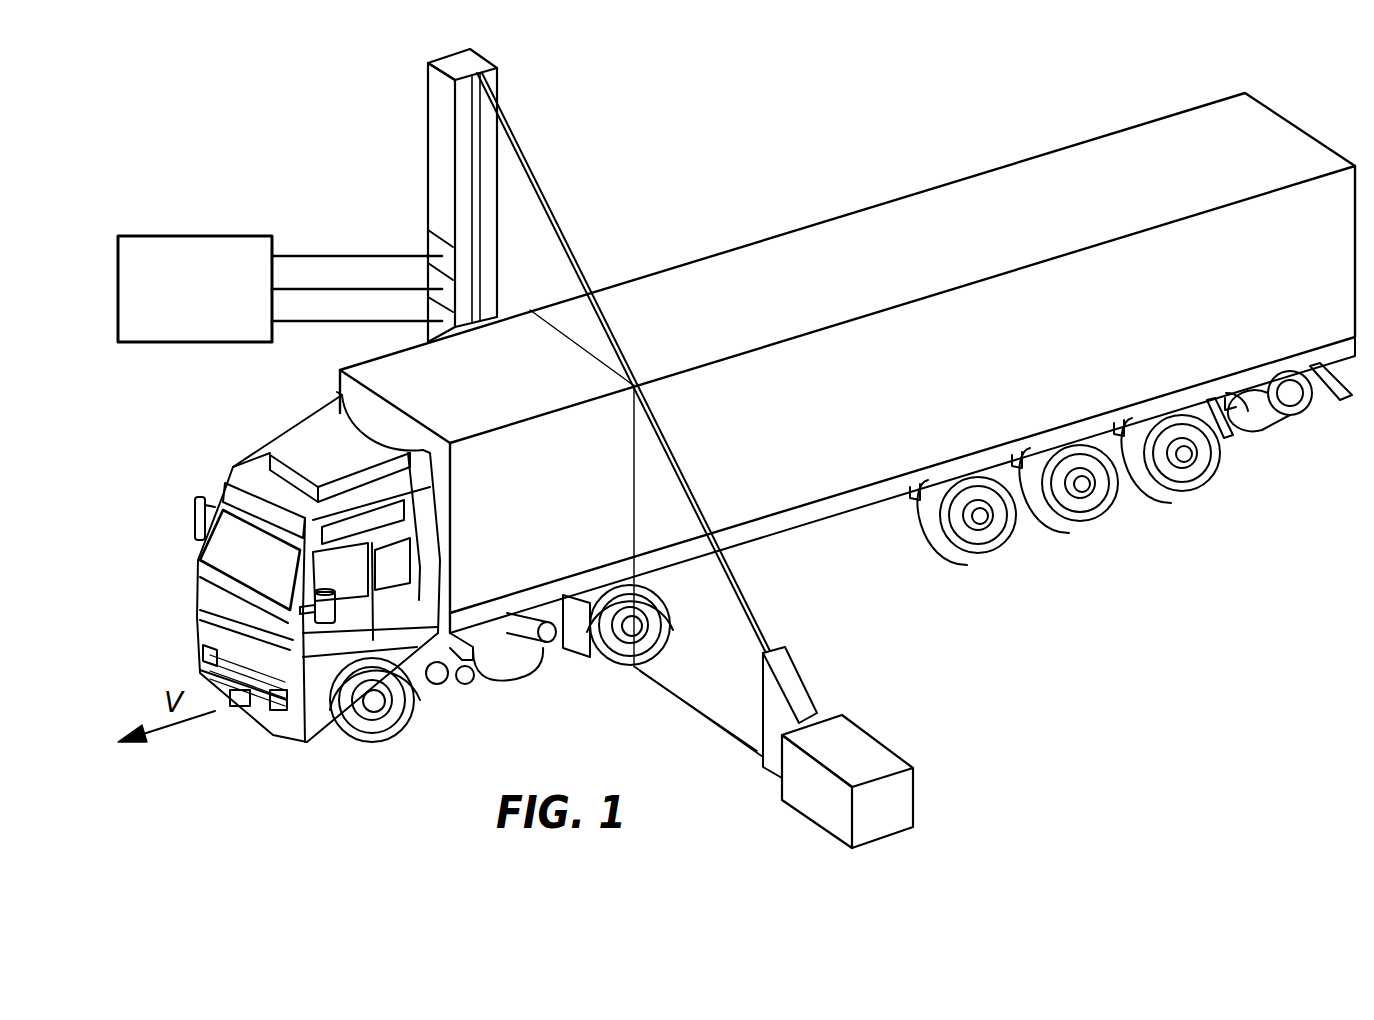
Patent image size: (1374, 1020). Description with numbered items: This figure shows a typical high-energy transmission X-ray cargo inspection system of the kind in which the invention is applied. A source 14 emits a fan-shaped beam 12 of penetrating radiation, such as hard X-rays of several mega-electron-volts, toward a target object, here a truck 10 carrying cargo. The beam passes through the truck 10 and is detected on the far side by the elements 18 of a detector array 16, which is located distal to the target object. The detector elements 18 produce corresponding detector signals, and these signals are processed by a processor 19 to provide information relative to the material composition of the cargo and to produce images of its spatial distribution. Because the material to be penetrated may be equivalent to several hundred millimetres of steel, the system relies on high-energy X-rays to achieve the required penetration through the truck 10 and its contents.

The truck 10 is at (738, 279).
The fan-shaped beam 12 is at (567, 249).
The source 14 is at (845, 752).
The detector array 16 is at (453, 187).
The detector elements 18 is at (440, 247).
The processor 19 is at (180, 306).